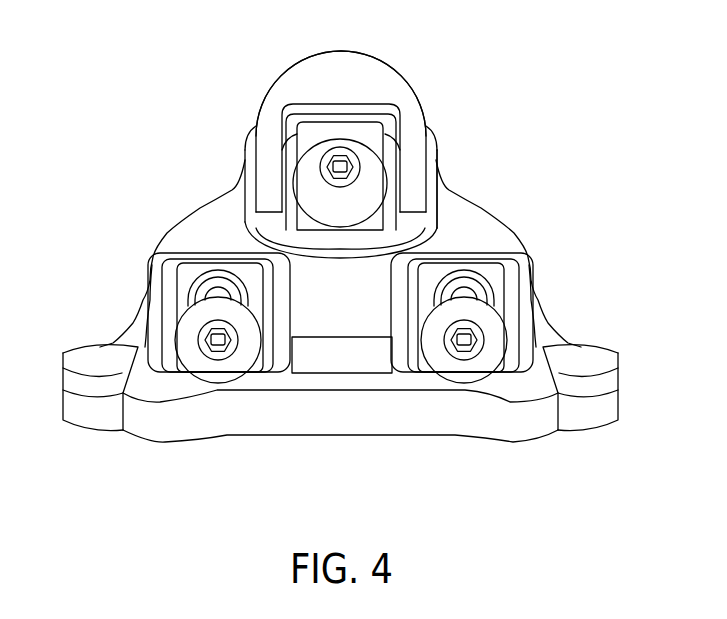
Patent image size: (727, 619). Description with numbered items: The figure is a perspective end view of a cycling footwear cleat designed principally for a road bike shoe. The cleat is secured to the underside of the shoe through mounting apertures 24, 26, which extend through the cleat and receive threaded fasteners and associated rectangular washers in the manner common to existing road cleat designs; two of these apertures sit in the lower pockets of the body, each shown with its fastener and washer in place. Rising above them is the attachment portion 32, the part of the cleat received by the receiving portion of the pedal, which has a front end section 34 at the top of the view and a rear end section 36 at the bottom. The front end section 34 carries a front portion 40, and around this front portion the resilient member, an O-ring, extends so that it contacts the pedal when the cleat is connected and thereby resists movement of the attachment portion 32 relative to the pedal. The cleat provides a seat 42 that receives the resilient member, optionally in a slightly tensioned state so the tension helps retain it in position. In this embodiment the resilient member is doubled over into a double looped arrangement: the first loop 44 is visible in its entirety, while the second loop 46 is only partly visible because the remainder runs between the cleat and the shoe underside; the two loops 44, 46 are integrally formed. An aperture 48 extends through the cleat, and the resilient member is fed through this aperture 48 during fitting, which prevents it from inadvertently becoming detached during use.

The mounting aperture 24 is at (490, 272).
The mounting aperture 26 is at (195, 272).
The attachment portion 32 is at (340, 250).
The front end section 34 is at (337, 63).
The rear end section 36 is at (340, 435).
The front portion 40 is at (418, 85).
The seat 42 is at (255, 125).
The first loop 44 is at (244, 158).
The second loop 46 is at (535, 188).
The aperture 48 is at (437, 223).